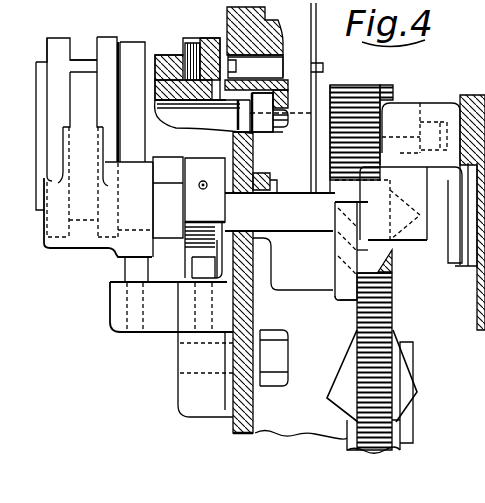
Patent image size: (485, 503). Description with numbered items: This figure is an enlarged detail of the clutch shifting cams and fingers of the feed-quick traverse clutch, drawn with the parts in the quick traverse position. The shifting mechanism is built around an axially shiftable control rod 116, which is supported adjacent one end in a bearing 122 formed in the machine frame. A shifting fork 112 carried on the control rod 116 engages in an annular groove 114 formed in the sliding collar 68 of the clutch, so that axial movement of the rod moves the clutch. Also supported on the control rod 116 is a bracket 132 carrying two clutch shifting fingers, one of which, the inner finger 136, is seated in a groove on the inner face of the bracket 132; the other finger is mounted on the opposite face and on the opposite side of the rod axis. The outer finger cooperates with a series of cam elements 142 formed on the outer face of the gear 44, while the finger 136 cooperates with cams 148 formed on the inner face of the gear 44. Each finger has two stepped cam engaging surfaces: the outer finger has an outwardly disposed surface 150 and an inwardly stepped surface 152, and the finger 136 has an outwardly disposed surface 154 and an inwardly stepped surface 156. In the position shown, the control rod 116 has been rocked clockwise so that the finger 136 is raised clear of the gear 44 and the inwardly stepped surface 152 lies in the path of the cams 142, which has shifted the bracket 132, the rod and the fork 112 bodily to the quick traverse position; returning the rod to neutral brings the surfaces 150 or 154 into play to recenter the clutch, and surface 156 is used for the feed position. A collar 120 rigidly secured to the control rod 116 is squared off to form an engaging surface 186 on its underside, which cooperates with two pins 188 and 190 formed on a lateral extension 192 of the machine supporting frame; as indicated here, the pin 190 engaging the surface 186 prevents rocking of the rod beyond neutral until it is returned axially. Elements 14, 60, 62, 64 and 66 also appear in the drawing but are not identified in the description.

The housing 14 is at (457, 127).
The gear 44 is at (378, 449).
The mounting plate 60 is at (252, 100).
The gear 62 is at (360, 97).
The spring 64 is at (196, 43).
The bearing block 66 is at (174, 88).
The sliding collar 68 is at (119, 42).
The shifting fork 112 is at (83, 98).
The annular groove 114 is at (82, 56).
The control rod 116 is at (288, 193).
The collar 120 is at (182, 157).
The bearing 122 is at (265, 173).
The bracket 132 is at (428, 105).
The clutch shifting finger 136 is at (340, 298).
The cam elements 142 is at (443, 250).
The cams 148 is at (320, 223).
The outwardly disposed cam engaging surface 150 is at (440, 270).
The inwardly stepped cam engaging surface 152 is at (428, 223).
The outwardly disposed cam engaging surface 154 is at (357, 290).
The inwardly stepped cam engaging surface 156 is at (350, 260).
The engaging surface 186 is at (197, 248).
The pin 188 is at (125, 270).
The pin 190 is at (200, 271).
The lateral extension 192 is at (130, 331).